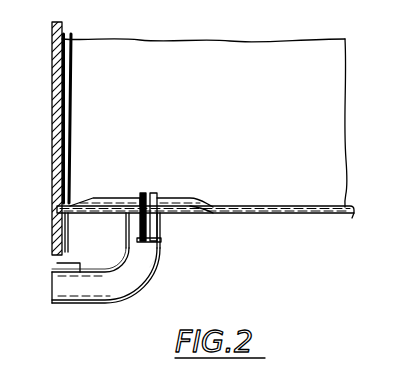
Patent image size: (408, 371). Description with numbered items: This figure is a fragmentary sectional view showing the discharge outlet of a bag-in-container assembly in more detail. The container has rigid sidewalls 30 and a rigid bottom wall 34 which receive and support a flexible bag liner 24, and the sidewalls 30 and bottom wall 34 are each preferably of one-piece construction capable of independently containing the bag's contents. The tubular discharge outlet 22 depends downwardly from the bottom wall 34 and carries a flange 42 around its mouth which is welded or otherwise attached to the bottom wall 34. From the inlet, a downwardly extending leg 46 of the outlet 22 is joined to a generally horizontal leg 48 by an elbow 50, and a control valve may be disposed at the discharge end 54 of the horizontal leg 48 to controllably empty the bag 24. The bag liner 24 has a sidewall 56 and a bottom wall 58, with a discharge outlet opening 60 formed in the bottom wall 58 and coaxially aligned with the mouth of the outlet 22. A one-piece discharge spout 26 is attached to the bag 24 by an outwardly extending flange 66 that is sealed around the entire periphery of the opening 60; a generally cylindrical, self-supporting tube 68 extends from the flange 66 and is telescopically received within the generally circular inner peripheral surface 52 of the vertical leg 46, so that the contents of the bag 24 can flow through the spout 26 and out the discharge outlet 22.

The tubular discharge outlet 22 is at (97, 291).
The flexible bag liner 24 is at (120, 43).
The discharge spout 26 is at (175, 193).
The rigid sidewalls 30 is at (53, 72).
The rigid bottom wall 34 is at (352, 215).
The flange 42 is at (190, 200).
The downwardly extending leg 46 is at (117, 233).
The horizontal leg 48 is at (70, 263).
The elbow 50 is at (152, 290).
The inner peripheral surface 52 is at (153, 263).
The discharge end 54 is at (53, 292).
The sidewall 56 is at (338, 120).
The bottom wall 58 is at (293, 213).
The discharge outlet opening 60 is at (105, 197).
The outwardly extending flange 66 is at (117, 197).
The tube 68 is at (150, 197).